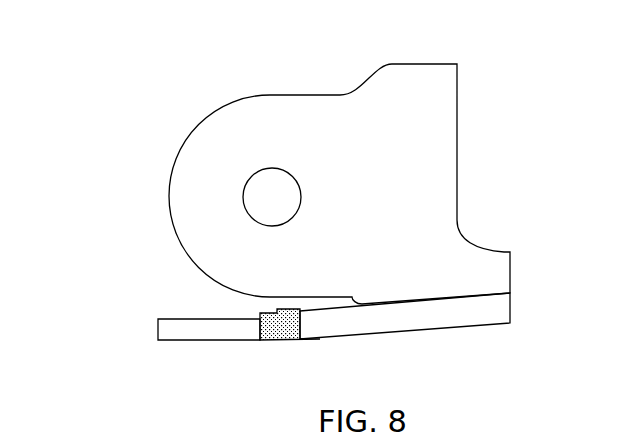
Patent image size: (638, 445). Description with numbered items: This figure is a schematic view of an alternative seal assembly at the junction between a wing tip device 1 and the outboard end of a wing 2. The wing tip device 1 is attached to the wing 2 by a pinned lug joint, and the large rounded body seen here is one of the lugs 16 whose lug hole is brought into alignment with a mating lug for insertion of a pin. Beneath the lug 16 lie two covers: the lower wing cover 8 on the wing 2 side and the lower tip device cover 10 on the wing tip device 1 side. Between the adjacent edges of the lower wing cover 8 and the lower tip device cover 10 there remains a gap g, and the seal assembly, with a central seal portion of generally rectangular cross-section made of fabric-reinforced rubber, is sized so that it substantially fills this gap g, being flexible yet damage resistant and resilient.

The wing tip device 1 is at (499, 84).
The wing 2 is at (85, 243).
The lower wing cover 8 is at (173, 333).
The lower tip device cover 10 is at (435, 315).
The lug 16 is at (236, 127).
The gap g is at (350, 366).